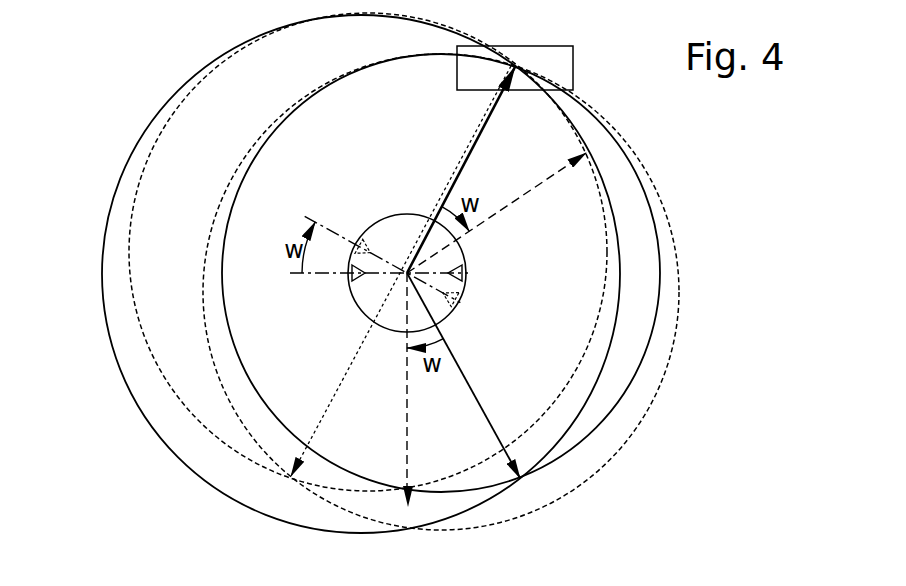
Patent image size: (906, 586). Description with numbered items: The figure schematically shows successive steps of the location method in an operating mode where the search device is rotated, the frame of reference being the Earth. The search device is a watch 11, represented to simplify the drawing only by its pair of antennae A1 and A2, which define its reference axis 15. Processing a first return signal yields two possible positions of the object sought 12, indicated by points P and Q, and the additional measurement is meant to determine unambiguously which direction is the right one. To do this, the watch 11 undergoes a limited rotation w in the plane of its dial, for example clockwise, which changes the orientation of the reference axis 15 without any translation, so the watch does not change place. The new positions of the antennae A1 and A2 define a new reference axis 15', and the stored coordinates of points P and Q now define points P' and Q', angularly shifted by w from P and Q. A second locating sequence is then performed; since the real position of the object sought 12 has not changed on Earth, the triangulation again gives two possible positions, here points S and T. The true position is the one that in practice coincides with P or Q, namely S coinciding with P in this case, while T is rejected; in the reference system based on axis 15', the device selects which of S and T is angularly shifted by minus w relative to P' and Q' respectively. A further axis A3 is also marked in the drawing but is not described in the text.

The watch 11 is at (397, 210).
The object sought 12 is at (574, 70).
The reference axis 15 is at (366, 297).
The new reference axis 15' is at (377, 236).
The antenna A1 is at (466, 267).
The antenna A2 is at (354, 290).
The axis A3 is at (567, 582).
The point P is at (472, 147).
The point P' is at (534, 196).
The point Q is at (493, 410).
The point Q' is at (388, 423).
The point T is at (293, 481).